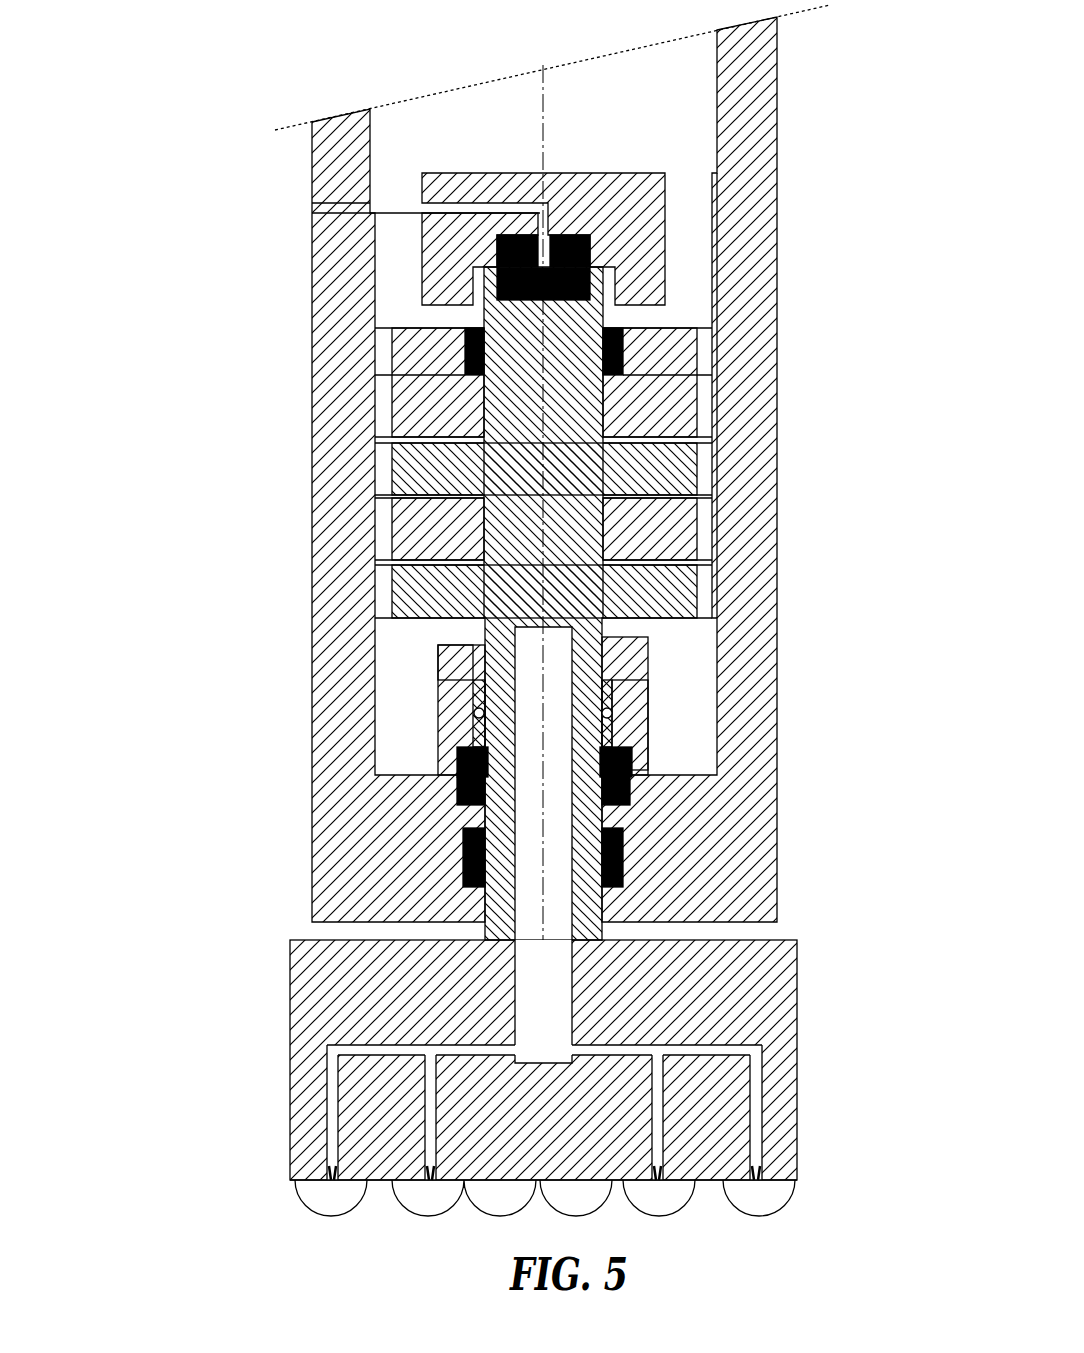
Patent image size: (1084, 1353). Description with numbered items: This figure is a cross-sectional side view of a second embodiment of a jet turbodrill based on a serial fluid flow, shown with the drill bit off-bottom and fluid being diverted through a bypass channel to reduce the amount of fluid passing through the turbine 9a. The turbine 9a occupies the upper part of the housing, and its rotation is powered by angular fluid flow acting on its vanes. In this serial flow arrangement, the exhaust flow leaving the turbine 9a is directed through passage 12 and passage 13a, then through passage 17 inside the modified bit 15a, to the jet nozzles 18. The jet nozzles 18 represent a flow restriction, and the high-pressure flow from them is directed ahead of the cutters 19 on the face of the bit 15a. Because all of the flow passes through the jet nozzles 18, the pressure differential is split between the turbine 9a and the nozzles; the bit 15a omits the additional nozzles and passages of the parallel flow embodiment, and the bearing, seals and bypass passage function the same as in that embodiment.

The turbine 9a is at (488, 938).
The passage 12 is at (617, 646).
The passage 13a is at (572, 851).
The bit 15a is at (770, 1010).
The passage 17 is at (755, 1082).
The jet nozzles 18 is at (770, 1183).
The cutters 19 is at (735, 1200).